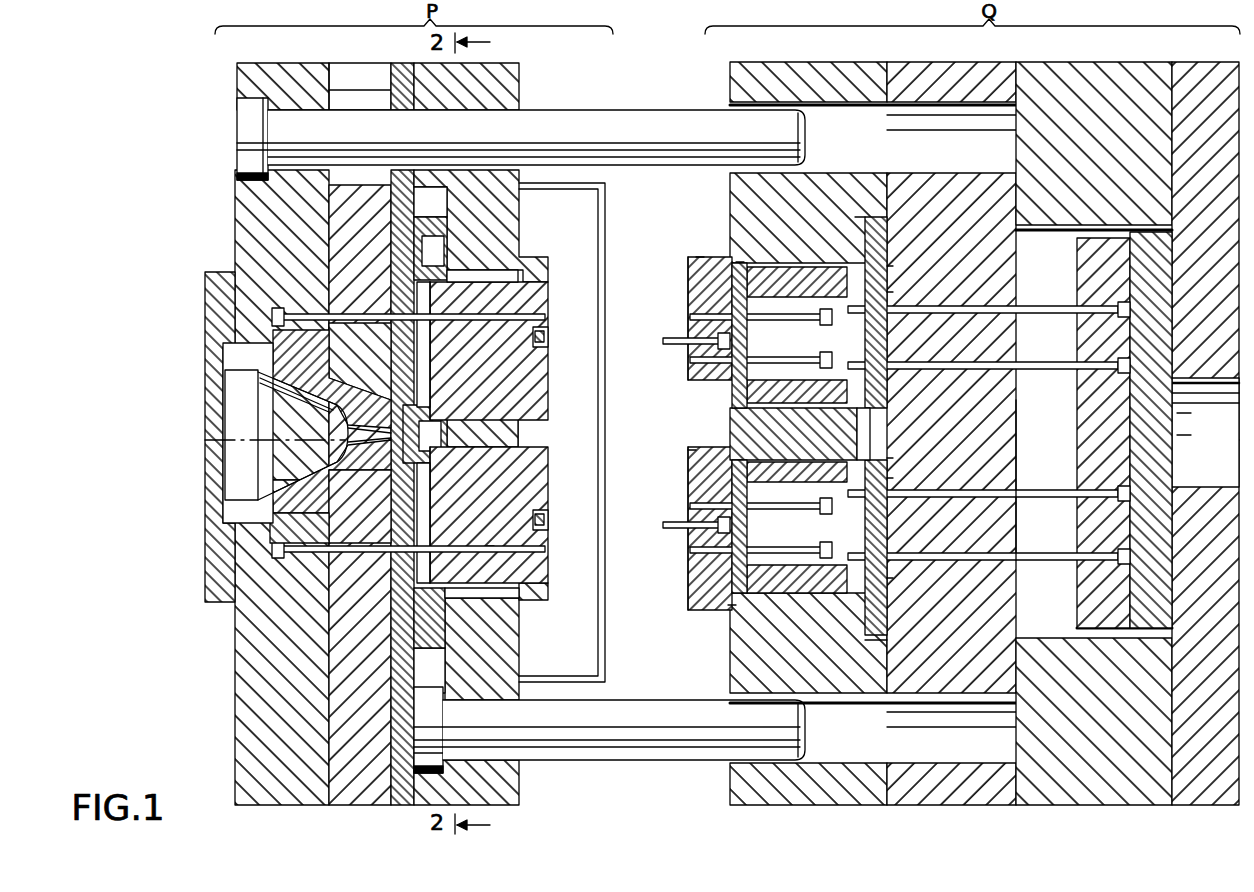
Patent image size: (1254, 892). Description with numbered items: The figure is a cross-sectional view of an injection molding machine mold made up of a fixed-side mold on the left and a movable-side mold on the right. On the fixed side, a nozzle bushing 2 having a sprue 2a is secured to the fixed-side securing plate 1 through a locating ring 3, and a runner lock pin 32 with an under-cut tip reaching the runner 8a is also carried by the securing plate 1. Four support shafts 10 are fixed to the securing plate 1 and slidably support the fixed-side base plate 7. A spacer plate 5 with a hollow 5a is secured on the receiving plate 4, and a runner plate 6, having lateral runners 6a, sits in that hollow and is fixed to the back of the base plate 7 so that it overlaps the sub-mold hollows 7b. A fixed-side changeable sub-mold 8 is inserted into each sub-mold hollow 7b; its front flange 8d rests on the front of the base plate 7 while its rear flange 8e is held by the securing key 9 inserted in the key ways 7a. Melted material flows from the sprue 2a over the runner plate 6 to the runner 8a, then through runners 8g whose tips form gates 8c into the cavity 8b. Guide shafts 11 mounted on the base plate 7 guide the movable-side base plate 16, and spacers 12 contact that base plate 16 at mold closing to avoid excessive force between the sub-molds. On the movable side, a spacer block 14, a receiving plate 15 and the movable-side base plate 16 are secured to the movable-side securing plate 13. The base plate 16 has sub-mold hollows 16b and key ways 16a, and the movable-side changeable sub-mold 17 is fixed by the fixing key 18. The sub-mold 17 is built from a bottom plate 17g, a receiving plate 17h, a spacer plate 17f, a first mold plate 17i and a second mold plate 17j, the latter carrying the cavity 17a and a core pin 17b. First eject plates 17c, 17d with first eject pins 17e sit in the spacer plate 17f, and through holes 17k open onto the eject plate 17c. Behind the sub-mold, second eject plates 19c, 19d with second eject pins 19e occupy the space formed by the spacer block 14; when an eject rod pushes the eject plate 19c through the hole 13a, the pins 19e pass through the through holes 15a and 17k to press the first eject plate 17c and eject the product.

The fixed-side securing plate 1 is at (268, 256).
The nozzle bushing 2 is at (248, 372).
The sprue 2a is at (330, 408).
The locating ring 3 is at (216, 604).
The receiving plate 4 is at (340, 248).
The spacer plate 5 is at (399, 215).
The hollow 5a is at (330, 506).
The runner plate 6 is at (383, 412).
The lateral runners 6a is at (353, 473).
The fixed-side base plate 7 is at (463, 90).
The key way 7a is at (425, 230).
The sub-mold hollow 7b is at (480, 272).
The fixed-side changeable sub-mold 8 is at (548, 258).
The runner 8a is at (430, 345).
The cavity 8b is at (547, 338).
The gate 8c is at (545, 316).
The front flange 8d is at (548, 270).
The rear flange 8e is at (418, 292).
The runner 8g is at (490, 320).
The securing key 9 is at (440, 263).
The support shaft 10 is at (596, 111).
The guide shaft 11 is at (610, 762).
The spacer 12 is at (606, 660).
The movable-side securing plate 13 is at (1197, 162).
The hole 13a is at (1212, 394).
The spacer block 14 is at (1089, 158).
The receiving plate 15 is at (944, 96).
The through hole 15a is at (978, 261).
The movable-side base plate 16 is at (795, 96).
The key way 16a is at (860, 222).
The sub-mold hollow 16b is at (745, 270).
The movable-side changeable sub-mold 17 is at (688, 272).
The cavity 17a is at (688, 304).
The core pin 17b is at (663, 341).
The first eject plate 17c is at (858, 432).
The first eject plate 17d is at (818, 627).
The first eject pin 17e is at (762, 322).
The spacer plate 17f is at (812, 267).
The bottom plate 17g is at (887, 266).
The receiving plate 17h is at (887, 292).
The first mold plate 17i is at (740, 262).
The second mold plate 17j is at (700, 257).
The through hole 17k is at (887, 478).
The movable-side fixing key 18 is at (885, 245).
The second eject plate 19c is at (1174, 340).
The second eject plate 19d is at (1082, 260).
The second eject pin 19e is at (980, 490).
The runner lock pin 32 is at (350, 360).